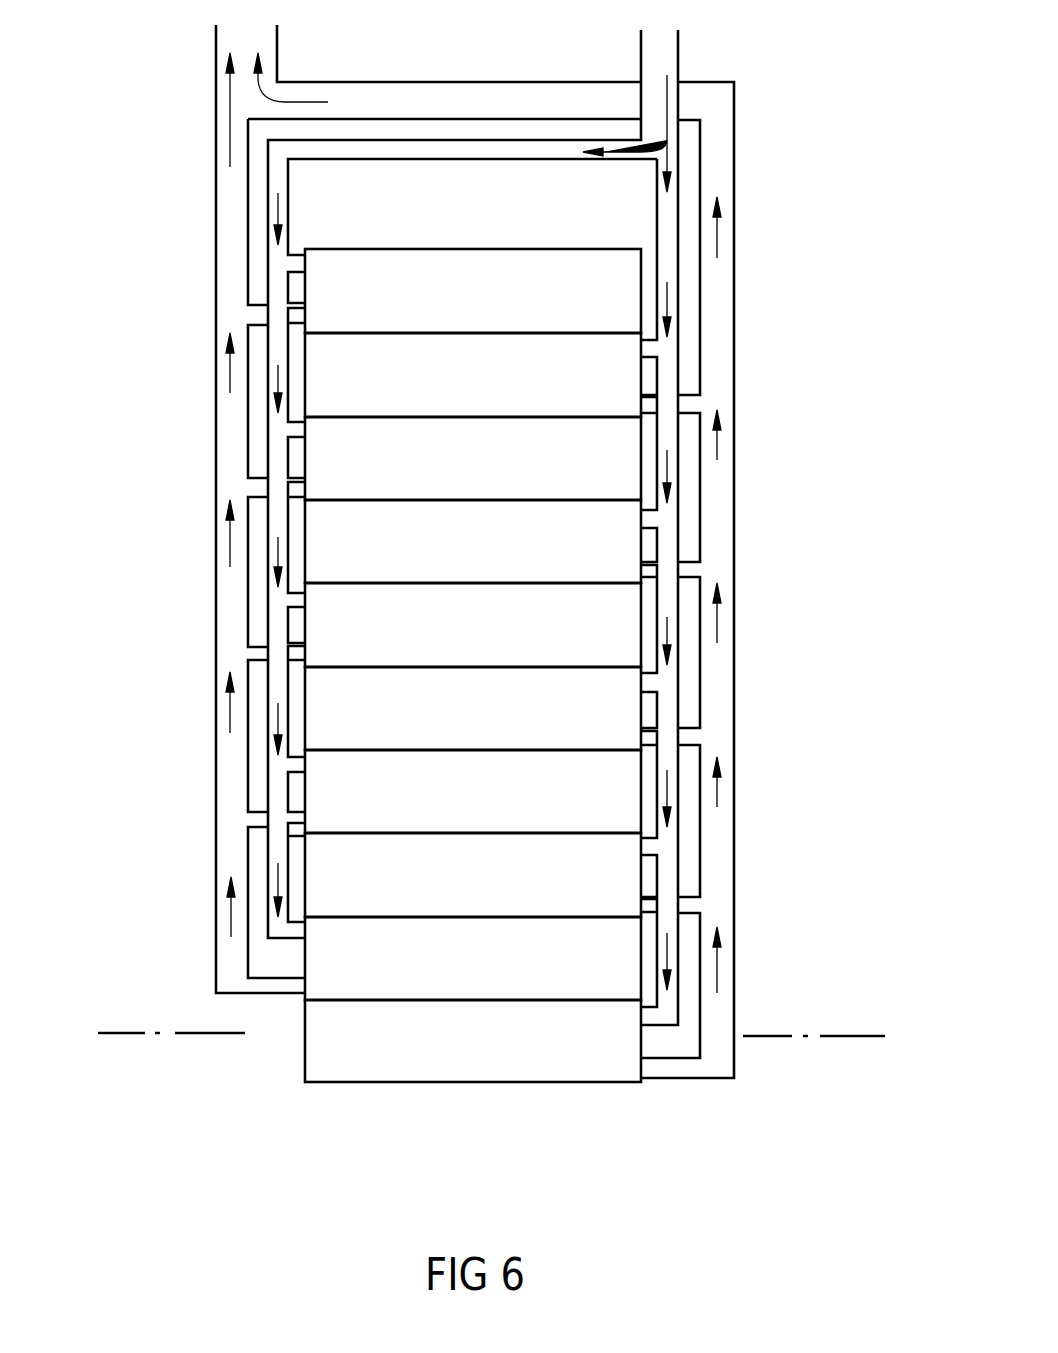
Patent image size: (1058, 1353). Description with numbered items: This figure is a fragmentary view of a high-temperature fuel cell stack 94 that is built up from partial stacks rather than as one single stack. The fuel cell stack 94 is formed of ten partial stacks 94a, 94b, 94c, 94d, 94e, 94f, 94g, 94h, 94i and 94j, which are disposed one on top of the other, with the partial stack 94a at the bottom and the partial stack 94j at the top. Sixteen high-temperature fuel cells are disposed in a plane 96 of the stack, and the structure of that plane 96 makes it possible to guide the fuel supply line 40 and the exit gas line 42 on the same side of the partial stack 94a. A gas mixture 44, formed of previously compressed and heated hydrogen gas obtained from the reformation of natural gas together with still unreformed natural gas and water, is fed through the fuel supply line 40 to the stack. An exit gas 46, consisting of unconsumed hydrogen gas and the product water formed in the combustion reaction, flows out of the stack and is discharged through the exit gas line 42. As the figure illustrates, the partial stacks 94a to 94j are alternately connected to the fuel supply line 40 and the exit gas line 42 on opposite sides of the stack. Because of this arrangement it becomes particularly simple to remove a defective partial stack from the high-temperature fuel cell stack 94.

The fuel supply line 40 is at (678, 45).
The exit gas line 42 is at (277, 40).
The gas mixture 44 is at (667, 108).
The exit gas 46 is at (232, 97).
The fuel cell stack 94 is at (420, 740).
The partial stack 94a is at (473, 1041).
The partial stack 94b is at (473, 958).
The partial stack 94c is at (473, 875).
The partial stack 94d is at (473, 791).
The partial stack 94e is at (473, 708).
The partial stack 94f is at (473, 625).
The partial stack 94g is at (473, 541).
The partial stack 94h is at (473, 458).
The partial stack 94i is at (473, 375).
The partial stack 94j is at (473, 291).
The plane 96 is at (855, 1035).